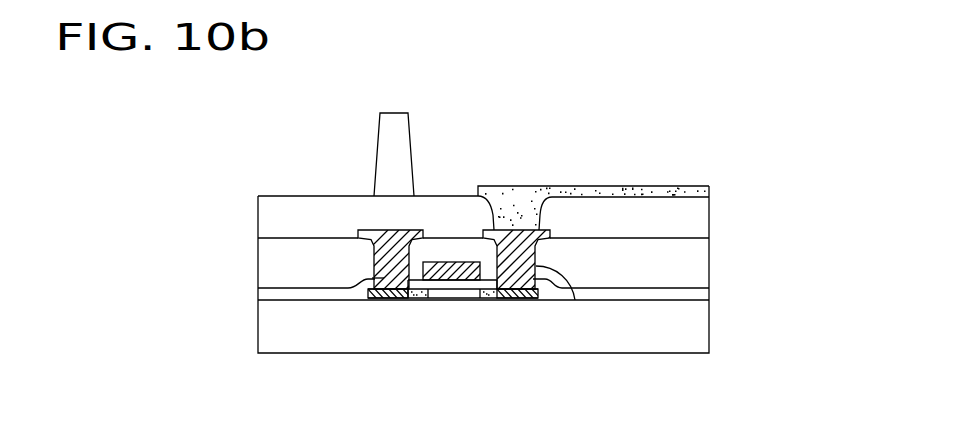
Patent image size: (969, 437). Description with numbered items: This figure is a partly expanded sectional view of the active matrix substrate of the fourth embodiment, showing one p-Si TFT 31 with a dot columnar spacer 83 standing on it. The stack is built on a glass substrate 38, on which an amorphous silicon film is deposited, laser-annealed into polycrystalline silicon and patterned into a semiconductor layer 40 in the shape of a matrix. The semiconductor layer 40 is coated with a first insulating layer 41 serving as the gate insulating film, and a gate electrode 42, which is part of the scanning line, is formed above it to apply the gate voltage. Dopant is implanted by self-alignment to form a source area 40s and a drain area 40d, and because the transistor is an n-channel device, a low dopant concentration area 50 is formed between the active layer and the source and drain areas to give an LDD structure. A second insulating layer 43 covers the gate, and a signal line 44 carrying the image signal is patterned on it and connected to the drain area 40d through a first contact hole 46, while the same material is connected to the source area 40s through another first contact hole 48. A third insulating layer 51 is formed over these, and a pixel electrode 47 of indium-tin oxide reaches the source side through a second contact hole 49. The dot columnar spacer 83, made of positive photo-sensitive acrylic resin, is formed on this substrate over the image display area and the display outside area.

The p-Si TFT 31 is at (497, 83).
The glass substrate 38 is at (688, 333).
The semiconductor layer 40 is at (455, 282).
The drain area 40d is at (383, 298).
The source area 40s is at (522, 298).
The first insulating layer 41 is at (697, 294).
The gate electrode 42 is at (453, 262).
The second insulating layer 43 is at (695, 265).
The signal line 44 is at (372, 230).
The first contact hole 46 is at (383, 278).
The pixel electrode 47 is at (708, 190).
The first contact hole 48 is at (575, 300).
The second contact hole 49 is at (515, 238).
The low dopant concentration area 50 is at (415, 298).
The third insulating layer 51 is at (695, 218).
The dot columnar spacer 83 is at (392, 113).